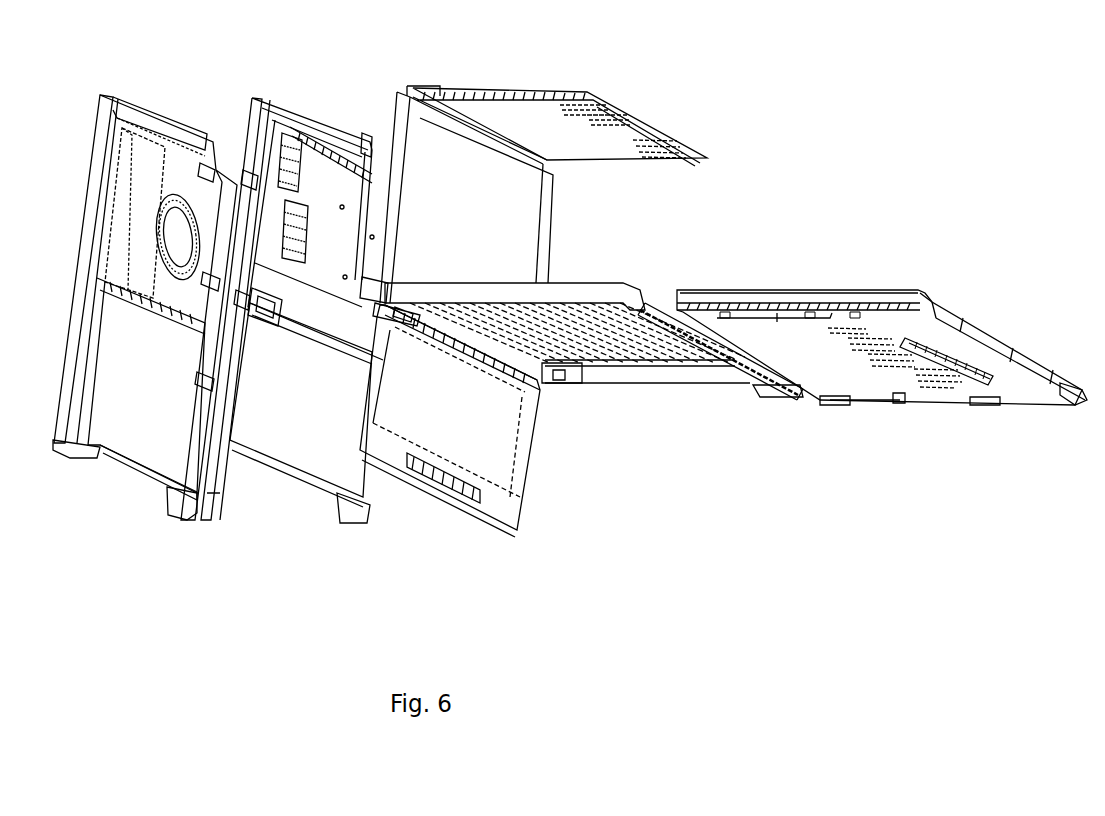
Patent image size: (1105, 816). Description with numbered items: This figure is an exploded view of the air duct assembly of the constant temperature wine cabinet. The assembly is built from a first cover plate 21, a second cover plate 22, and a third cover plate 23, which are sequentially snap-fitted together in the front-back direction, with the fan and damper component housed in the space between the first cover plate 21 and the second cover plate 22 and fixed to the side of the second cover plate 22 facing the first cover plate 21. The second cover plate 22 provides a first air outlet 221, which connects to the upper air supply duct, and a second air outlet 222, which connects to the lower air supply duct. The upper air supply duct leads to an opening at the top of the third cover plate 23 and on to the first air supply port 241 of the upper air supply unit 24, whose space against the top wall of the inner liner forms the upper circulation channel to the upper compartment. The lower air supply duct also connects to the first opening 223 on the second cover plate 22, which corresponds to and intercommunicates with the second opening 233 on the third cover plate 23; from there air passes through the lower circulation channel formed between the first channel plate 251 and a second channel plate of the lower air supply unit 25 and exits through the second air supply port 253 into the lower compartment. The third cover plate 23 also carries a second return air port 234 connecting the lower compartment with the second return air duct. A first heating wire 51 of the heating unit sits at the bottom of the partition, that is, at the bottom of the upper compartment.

The first cover plate 21 is at (167, 110).
The second cover plate 22 is at (294, 269).
The first air outlet 221 is at (310, 235).
The second air outlet 222 is at (330, 190).
The first opening 223 is at (281, 322).
The third cover plate 23 is at (502, 275).
The second opening 233 is at (410, 324).
The second return air port 234 is at (432, 490).
The upper air supply unit 24 is at (557, 143).
The first air supply port 241 is at (655, 160).
The lower air supply unit 25 is at (882, 315).
The first channel plate 251 is at (859, 293).
The second air supply port 253 is at (943, 399).
The first heating wire 51 is at (578, 385).